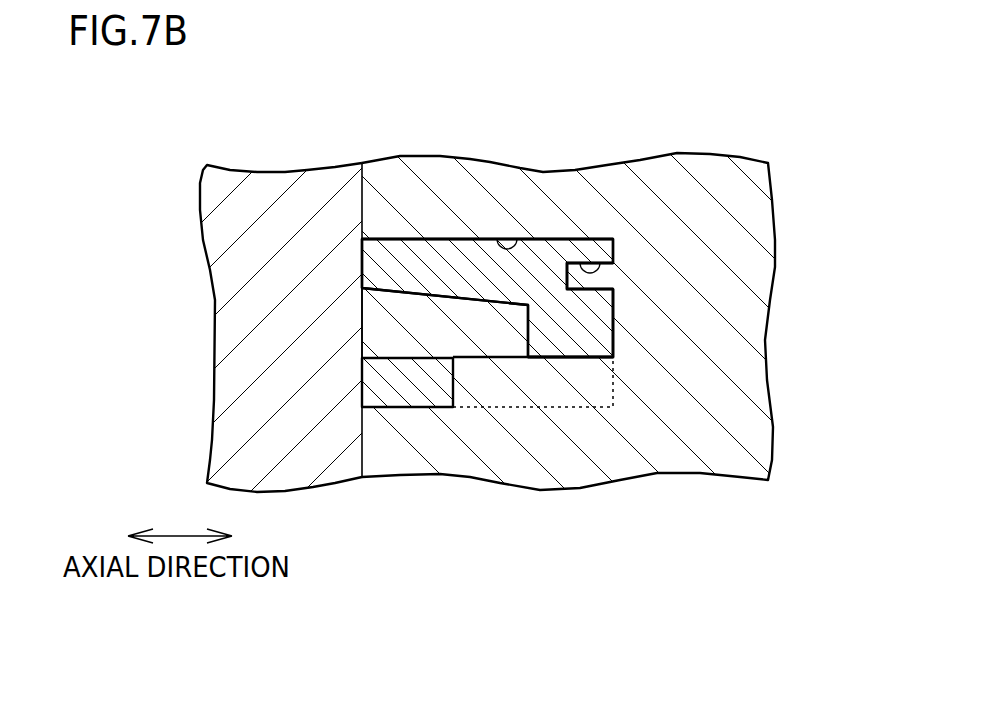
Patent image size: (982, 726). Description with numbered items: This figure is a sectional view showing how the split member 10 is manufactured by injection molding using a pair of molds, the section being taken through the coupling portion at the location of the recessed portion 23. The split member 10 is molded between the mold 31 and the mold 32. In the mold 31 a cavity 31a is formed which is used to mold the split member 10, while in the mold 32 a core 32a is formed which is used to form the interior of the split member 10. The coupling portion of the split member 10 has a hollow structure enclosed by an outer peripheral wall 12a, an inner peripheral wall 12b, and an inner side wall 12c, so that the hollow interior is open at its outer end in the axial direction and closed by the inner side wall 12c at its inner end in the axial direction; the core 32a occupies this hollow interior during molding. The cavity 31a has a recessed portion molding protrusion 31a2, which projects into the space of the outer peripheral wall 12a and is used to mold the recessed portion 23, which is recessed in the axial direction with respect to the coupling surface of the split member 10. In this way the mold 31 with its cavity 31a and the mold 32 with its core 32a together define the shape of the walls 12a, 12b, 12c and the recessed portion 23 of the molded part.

The split member 10 is at (446, 236).
The outer peripheral wall 12a is at (398, 257).
The inner peripheral wall 12b is at (433, 408).
The inner side wall 12c is at (592, 343).
The recessed portion 23 is at (600, 262).
The mold 31 is at (697, 187).
The cavity 31a is at (516, 239).
The recessed portion molding protrusion 31a2 is at (577, 283).
The mold 32 is at (243, 197).
The core 32a is at (408, 345).